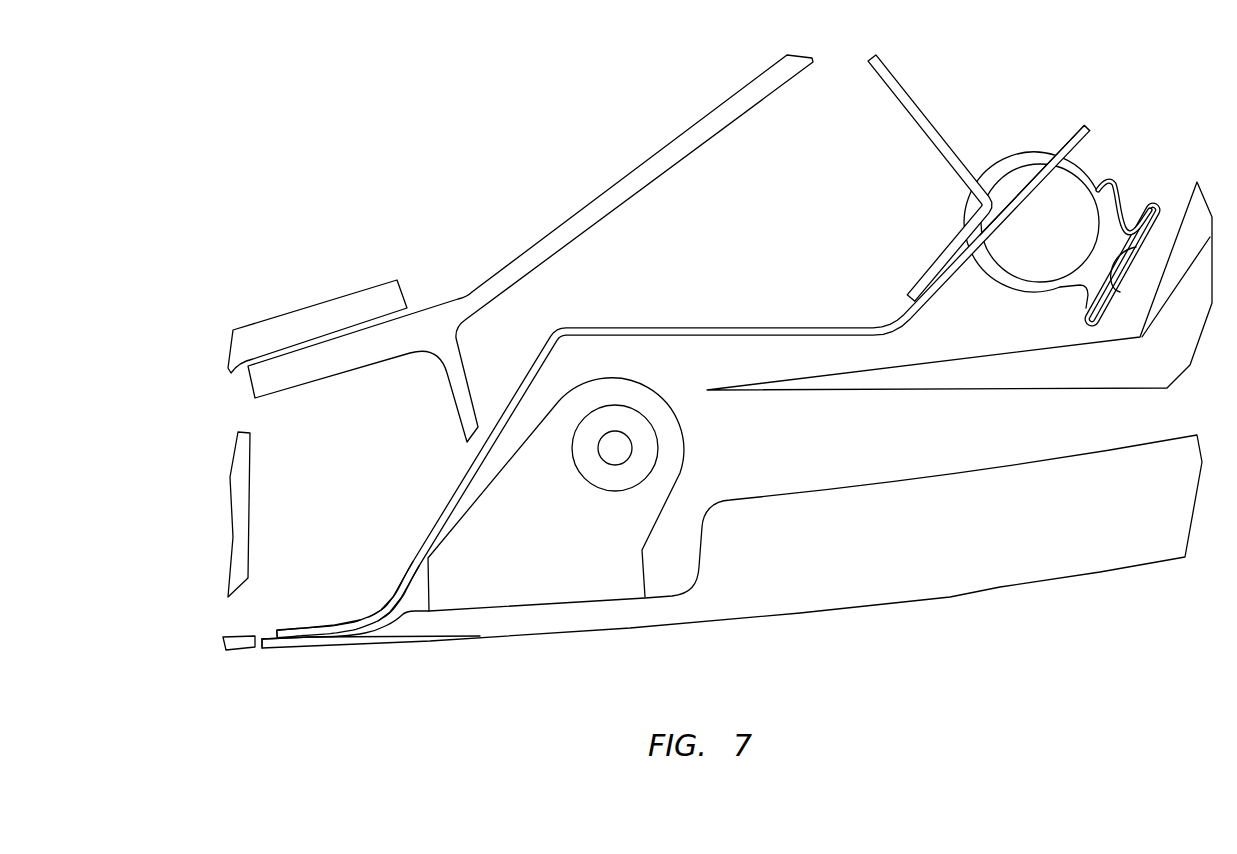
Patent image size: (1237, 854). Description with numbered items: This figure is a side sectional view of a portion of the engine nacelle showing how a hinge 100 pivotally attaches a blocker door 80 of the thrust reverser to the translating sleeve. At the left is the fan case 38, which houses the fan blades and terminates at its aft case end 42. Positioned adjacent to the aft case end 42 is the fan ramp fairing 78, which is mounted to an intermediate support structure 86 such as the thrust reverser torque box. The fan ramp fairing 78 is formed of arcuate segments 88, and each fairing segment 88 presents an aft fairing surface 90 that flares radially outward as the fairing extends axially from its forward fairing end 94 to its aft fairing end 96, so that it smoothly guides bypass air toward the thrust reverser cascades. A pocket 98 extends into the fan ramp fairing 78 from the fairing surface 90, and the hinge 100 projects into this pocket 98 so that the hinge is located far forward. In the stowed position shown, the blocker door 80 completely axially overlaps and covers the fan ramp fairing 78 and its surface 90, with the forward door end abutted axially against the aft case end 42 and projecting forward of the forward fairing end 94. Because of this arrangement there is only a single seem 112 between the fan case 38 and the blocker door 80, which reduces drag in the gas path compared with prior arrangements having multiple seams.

The fan case 38 is at (235, 658).
The aft case end 42 is at (262, 655).
The fan ramp fairing 78 is at (388, 590).
The blocker door 80 is at (903, 612).
The intermediate support structure 86 is at (645, 158).
The arcuate segment 88 is at (388, 590).
The aft fairing surface 90 is at (952, 292).
The forward fairing end 94 is at (275, 628).
The aft fairing end 96 is at (1088, 124).
The pocket 98 is at (630, 353).
The hinge 100 is at (680, 476).
The seem 112 is at (272, 659).